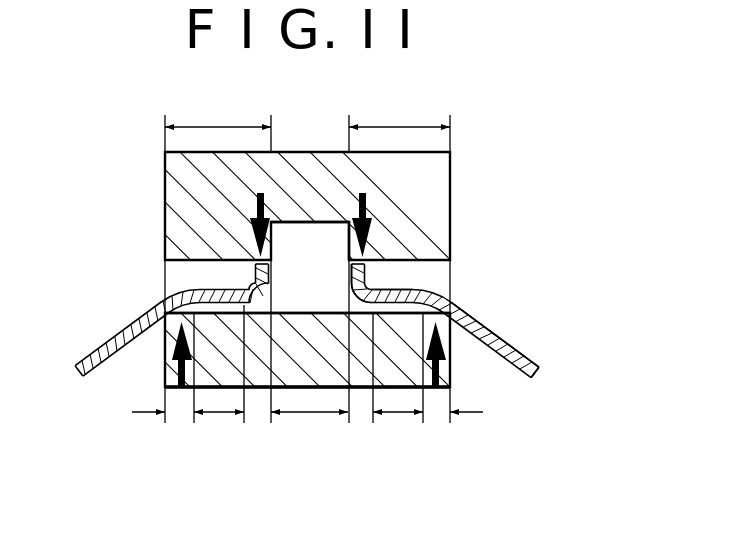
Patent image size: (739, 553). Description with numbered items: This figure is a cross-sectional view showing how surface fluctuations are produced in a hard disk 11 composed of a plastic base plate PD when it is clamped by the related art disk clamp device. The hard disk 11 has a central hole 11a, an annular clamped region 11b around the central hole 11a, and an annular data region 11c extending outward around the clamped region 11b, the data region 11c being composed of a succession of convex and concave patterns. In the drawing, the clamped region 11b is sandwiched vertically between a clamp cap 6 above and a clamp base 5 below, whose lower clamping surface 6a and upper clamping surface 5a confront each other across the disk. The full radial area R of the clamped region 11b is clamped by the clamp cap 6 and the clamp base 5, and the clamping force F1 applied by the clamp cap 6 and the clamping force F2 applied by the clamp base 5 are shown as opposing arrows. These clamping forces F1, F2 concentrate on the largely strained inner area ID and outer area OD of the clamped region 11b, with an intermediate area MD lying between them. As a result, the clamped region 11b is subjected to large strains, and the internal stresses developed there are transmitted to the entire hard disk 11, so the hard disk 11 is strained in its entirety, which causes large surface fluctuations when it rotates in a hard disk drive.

The clamp base 5 is at (318, 373).
The upper clamping surface 5a is at (300, 313).
The clamp cap 6 is at (307, 170).
The lower clamping surface 6a is at (425, 250).
The hard disk 11 is at (506, 312).
The central hole 11a is at (333, 270).
The clamped region 11b is at (422, 288).
The data region 11c is at (541, 362).
The clamping force F1 is at (250, 205).
The clamping force F2 is at (180, 372).
The full radial area R is at (215, 124).
The outer area OD is at (178, 413).
The middle diameter region MD is at (218, 413).
The inner area ID is at (257, 413).
The plastic base plate PD is at (518, 350).